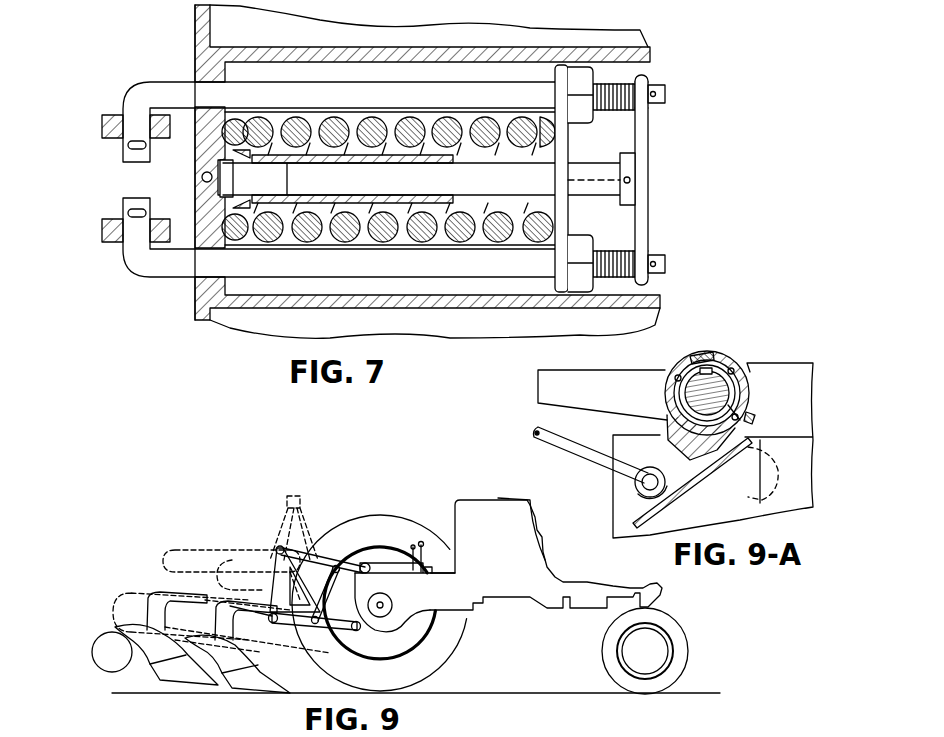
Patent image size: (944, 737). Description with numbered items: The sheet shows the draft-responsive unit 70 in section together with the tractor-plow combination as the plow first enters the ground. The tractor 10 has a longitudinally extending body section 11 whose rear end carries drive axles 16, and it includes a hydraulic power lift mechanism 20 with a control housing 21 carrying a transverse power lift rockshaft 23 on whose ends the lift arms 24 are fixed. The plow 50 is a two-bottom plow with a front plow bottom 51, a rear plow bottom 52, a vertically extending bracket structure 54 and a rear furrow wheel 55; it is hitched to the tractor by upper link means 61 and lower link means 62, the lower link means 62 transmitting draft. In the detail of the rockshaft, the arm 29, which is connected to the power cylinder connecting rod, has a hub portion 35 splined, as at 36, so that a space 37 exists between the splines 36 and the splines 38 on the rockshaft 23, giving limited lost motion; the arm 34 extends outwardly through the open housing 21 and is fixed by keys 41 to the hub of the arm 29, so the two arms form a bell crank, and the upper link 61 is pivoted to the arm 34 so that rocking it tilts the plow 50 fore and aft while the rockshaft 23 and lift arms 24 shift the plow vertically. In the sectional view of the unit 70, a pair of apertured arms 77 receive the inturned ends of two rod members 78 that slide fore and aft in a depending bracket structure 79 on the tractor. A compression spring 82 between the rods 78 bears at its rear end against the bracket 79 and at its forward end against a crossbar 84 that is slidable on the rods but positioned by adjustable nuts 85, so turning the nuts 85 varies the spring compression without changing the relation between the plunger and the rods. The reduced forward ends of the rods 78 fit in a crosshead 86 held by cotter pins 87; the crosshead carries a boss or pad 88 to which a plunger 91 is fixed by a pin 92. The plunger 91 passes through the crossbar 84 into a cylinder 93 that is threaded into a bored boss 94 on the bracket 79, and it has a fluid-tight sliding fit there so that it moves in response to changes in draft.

In FIG. 7, the draft-responsive unit 70 is at (181, 333).
In FIG. 7, the depending bracket structure 79 is at (203, 58).
In FIG. 7, the rod members 78 is at (356, 84).
In FIG. 7, the apertured arms 77 is at (108, 131).
In FIG. 7, the compression spring 82 is at (333, 122).
In FIG. 7, the cylinder 93 is at (383, 162).
In FIG. 7, the bored boss 94 is at (245, 212).
In FIG. 7, the crossbar 84 is at (561, 70).
In FIG. 7, the adjustable nuts 85 is at (580, 70).
In FIG. 7, the crosshead 86 is at (647, 223).
In FIG. 7, the cotter pins 87 is at (659, 93).
In FIG. 7, the boss or pad 88 is at (633, 160).
In FIG. 7, the plunger 91 is at (589, 187).
In FIG. 7, the pin 92 is at (631, 180).
In FIG. 9-A, the control housing 21 is at (806, 362).
In FIG. 9-A, the lift arms 24 is at (538, 380).
In FIG. 9-A, the splines on rockshaft 38 is at (713, 367).
In FIG. 9-A, the splines of hub portion 36 is at (736, 376).
In FIG. 9-A, the hub portion 35 is at (682, 398).
In FIG. 9-A, the space 37 is at (700, 358).
In FIG. 9-A, the keys 41 is at (677, 379).
In FIG. 9-A, the power lift rockshaft 23 is at (746, 404).
In FIG. 9-A, the arm 29 is at (737, 465).
In FIG. 9-A, the upper link means 61 is at (572, 452).
In FIG. 9-A, the arm 34 is at (636, 489).
In FIG. 9, the tractor 10 is at (486, 497).
In FIG. 9, the tractor body section 11 is at (448, 600).
In FIG. 9, the drive axles 16 is at (383, 607).
In FIG. 9, the power lift mechanism 20 is at (386, 561).
In FIG. 9, the lower link means 62 is at (307, 628).
In FIG. 9, the bracket structure 54 is at (262, 570).
In FIG. 9, the plow 50 is at (168, 553).
In FIG. 9, the front plow bottom 51 is at (244, 670).
In FIG. 9, the rear plow bottom 52 is at (182, 678).
In FIG. 9, the rear furrow wheel 55 is at (98, 655).